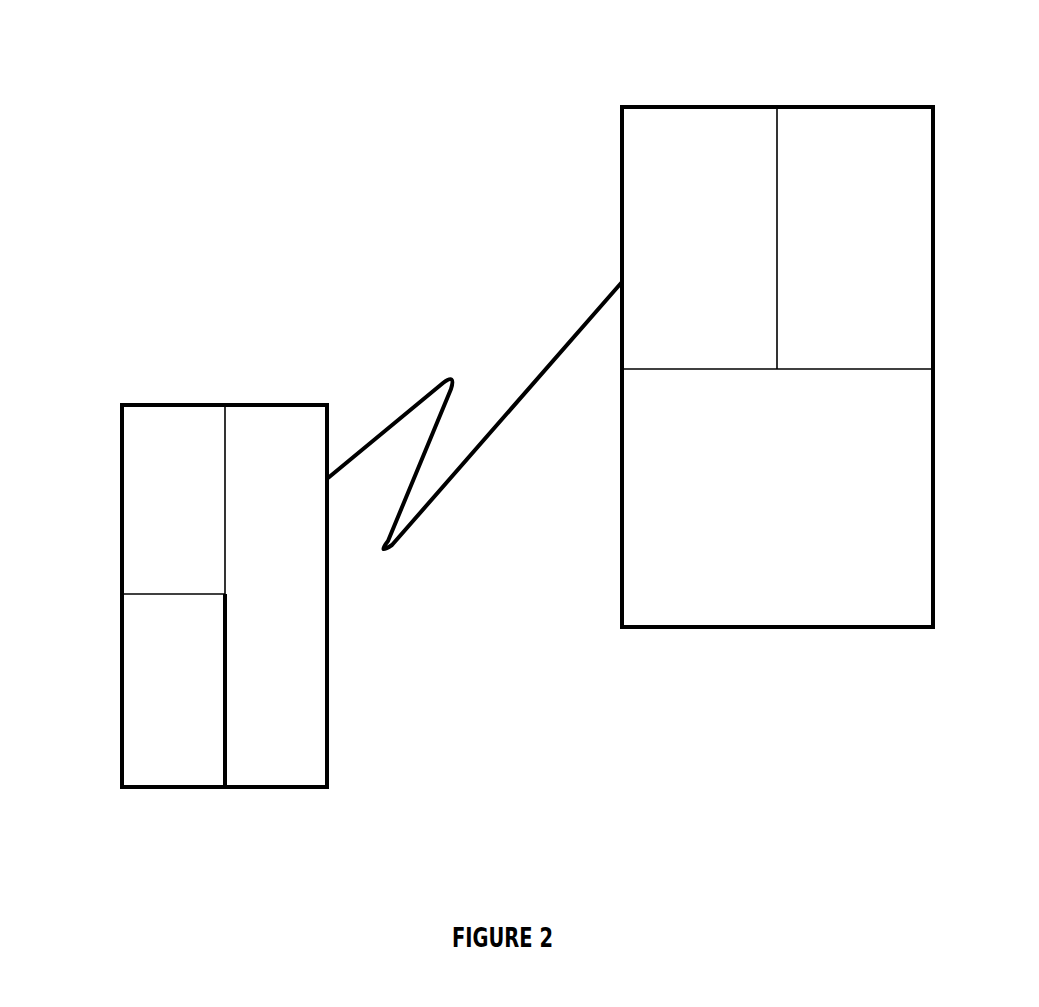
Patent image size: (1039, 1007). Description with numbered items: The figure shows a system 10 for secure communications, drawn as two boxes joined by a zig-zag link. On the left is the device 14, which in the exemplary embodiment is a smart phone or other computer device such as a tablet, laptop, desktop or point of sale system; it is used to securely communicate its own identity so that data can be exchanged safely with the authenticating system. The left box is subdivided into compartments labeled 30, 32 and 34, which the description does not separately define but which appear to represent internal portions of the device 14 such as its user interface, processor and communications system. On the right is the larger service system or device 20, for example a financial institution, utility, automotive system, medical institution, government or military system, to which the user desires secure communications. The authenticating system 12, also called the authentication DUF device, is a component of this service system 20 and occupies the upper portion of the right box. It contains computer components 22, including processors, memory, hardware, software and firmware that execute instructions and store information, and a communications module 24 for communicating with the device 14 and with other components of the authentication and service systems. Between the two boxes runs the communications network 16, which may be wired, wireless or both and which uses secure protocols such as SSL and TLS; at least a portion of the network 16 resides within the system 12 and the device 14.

The system 10 is at (240, 208).
The authenticating system 12 is at (855, 95).
The device 14 is at (169, 387).
The communications network 16 is at (424, 370).
The service system or device 20 is at (620, 512).
The computer components 22 is at (937, 253).
The communications module 24 is at (618, 222).
The left side wall of second housing 30 is at (122, 477).
The lower compartment of second housing 32 is at (122, 660).
The right side wall of second housing 34 is at (330, 645).